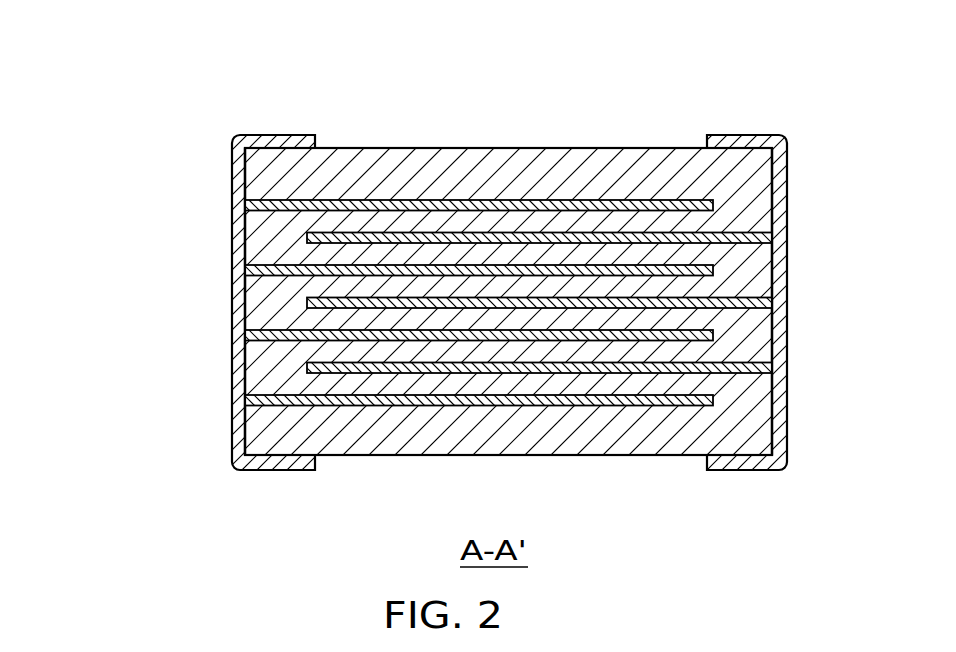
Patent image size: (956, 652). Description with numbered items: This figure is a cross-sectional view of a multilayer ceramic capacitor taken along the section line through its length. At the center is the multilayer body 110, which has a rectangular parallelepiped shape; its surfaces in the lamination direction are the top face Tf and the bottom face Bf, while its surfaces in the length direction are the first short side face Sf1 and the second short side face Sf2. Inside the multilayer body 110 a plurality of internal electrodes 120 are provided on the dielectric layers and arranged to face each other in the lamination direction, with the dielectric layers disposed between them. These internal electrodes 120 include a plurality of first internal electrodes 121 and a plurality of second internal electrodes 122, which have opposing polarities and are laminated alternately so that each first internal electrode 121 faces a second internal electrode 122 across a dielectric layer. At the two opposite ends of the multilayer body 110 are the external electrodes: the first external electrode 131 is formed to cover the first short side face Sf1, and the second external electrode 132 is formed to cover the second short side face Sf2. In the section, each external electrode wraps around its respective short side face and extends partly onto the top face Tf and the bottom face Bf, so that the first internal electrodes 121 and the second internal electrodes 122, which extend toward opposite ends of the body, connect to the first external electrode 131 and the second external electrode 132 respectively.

The multilayer body 110 is at (500, 148).
The internal electrodes 120 is at (497, 303).
The first internal electrodes 121 is at (283, 211).
The second internal electrodes 122 is at (340, 244).
The first external electrode 131 is at (277, 137).
The second external electrode 132 is at (738, 135).
The top face Tf is at (602, 148).
The bottom face Bf is at (408, 457).
The first short side face Sf1 is at (769, 422).
The second short side face Sf2 is at (243, 362).